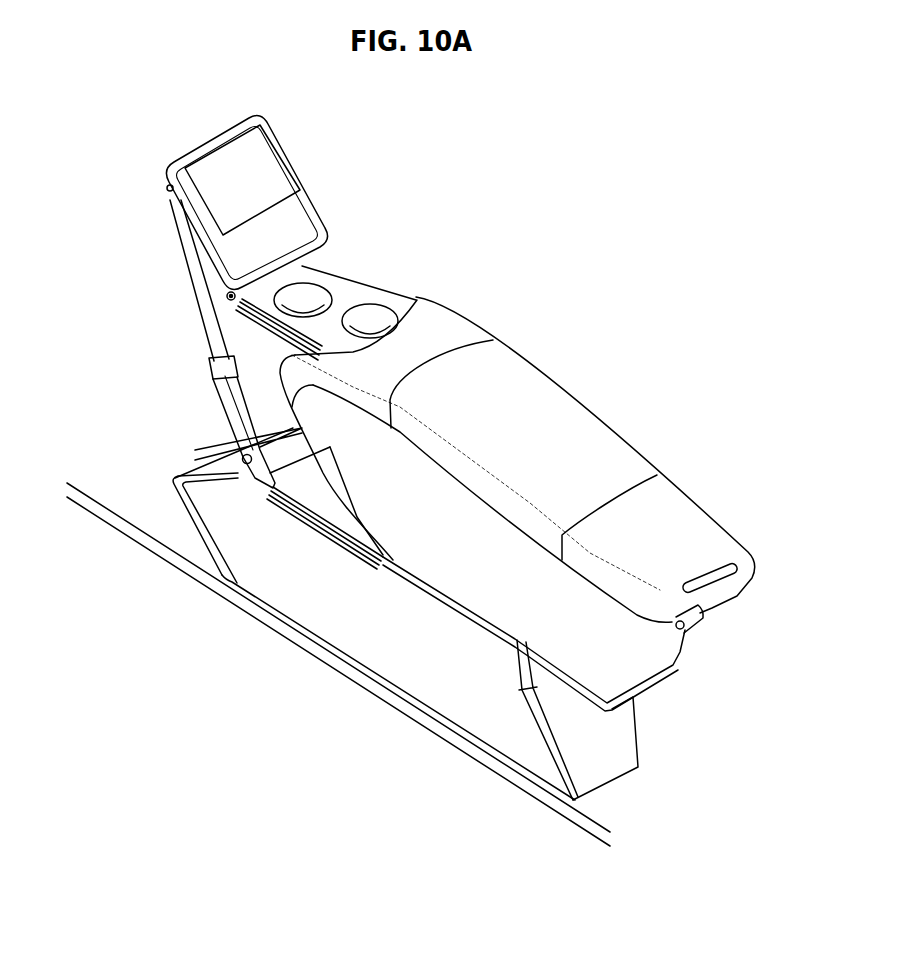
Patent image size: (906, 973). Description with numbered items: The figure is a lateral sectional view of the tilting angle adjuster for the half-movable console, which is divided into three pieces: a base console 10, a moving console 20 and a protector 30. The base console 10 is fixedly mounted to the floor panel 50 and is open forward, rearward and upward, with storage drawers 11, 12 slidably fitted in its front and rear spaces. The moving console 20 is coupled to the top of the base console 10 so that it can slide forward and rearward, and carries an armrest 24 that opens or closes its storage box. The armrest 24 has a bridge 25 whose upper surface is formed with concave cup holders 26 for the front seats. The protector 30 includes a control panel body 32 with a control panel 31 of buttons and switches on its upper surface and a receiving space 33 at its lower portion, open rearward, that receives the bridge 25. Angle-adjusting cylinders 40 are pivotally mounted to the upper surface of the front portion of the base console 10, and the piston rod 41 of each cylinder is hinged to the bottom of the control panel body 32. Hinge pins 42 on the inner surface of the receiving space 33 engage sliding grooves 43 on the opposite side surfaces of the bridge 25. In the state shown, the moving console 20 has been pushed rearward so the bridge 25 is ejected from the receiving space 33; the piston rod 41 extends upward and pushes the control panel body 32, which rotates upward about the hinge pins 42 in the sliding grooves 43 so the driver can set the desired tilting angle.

The base console 10 is at (393, 637).
The storage drawer 11 is at (200, 540).
The storage drawer 12 is at (610, 733).
The moving console 20 is at (480, 592).
The armrest 24 is at (560, 410).
The bridge 25 is at (313, 300).
The cup holders 26 is at (373, 318).
The protector 30 is at (214, 188).
The control panel 31 is at (262, 150).
The control panel body 32 is at (188, 223).
The receiving space 33 is at (340, 270).
The angle-adjusting cylinder 40 is at (190, 344).
The piston rod 41 is at (210, 322).
The hinge pins 42 is at (227, 296).
The sliding grooves 43 is at (228, 370).
The floor panel 50 is at (490, 762).